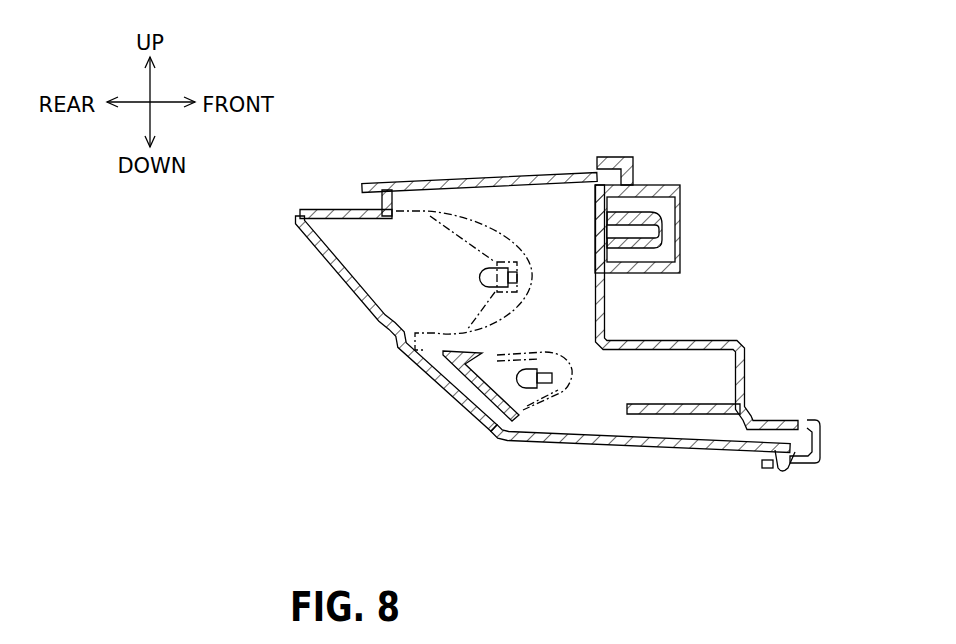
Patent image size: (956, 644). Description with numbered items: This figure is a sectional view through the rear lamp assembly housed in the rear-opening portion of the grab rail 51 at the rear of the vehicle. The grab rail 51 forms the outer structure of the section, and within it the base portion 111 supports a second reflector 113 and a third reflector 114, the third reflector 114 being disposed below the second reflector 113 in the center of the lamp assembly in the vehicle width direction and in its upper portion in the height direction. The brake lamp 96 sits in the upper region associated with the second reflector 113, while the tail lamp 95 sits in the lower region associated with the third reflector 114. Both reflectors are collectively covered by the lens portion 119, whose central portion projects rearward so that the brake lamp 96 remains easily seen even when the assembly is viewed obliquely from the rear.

The grab rail 51 is at (479, 313).
The lens portion 119 is at (357, 308).
The base portion 111 is at (665, 184).
The second reflector 113 is at (405, 208).
The brake lamp 96 is at (480, 274).
The third reflector 114 is at (557, 388).
The tail lamp 95 is at (517, 378).